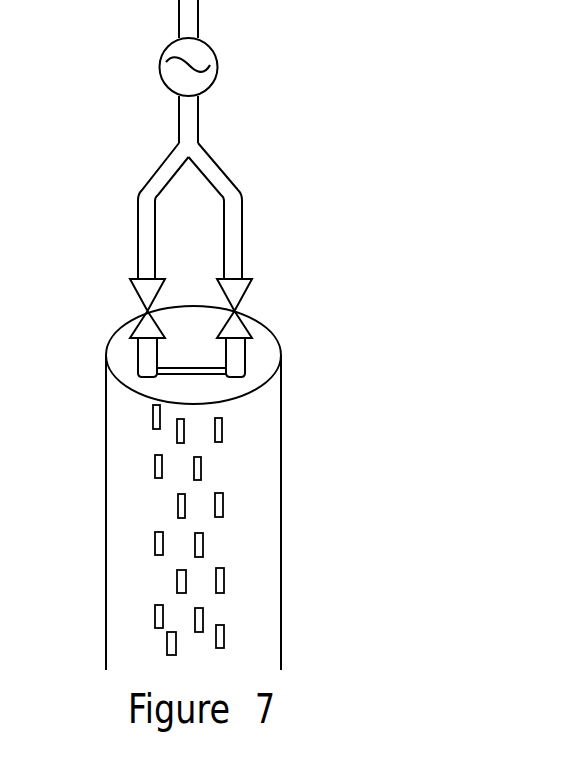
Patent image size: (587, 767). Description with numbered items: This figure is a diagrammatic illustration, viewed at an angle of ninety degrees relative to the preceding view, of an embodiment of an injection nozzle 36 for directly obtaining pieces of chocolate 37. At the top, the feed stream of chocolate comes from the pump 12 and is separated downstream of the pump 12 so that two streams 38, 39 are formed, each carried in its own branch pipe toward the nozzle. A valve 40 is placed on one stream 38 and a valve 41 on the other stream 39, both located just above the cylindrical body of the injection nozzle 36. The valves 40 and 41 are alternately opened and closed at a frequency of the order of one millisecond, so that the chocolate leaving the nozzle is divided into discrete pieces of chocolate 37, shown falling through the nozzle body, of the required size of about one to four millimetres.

The pump 12 is at (217, 57).
The injection nozzle 36 is at (86, 333).
The pieces of chocolate 37 is at (223, 505).
The first stream 38 is at (148, 193).
The second stream 39 is at (232, 195).
The first valve 40 is at (145, 288).
The second valve 41 is at (233, 288).